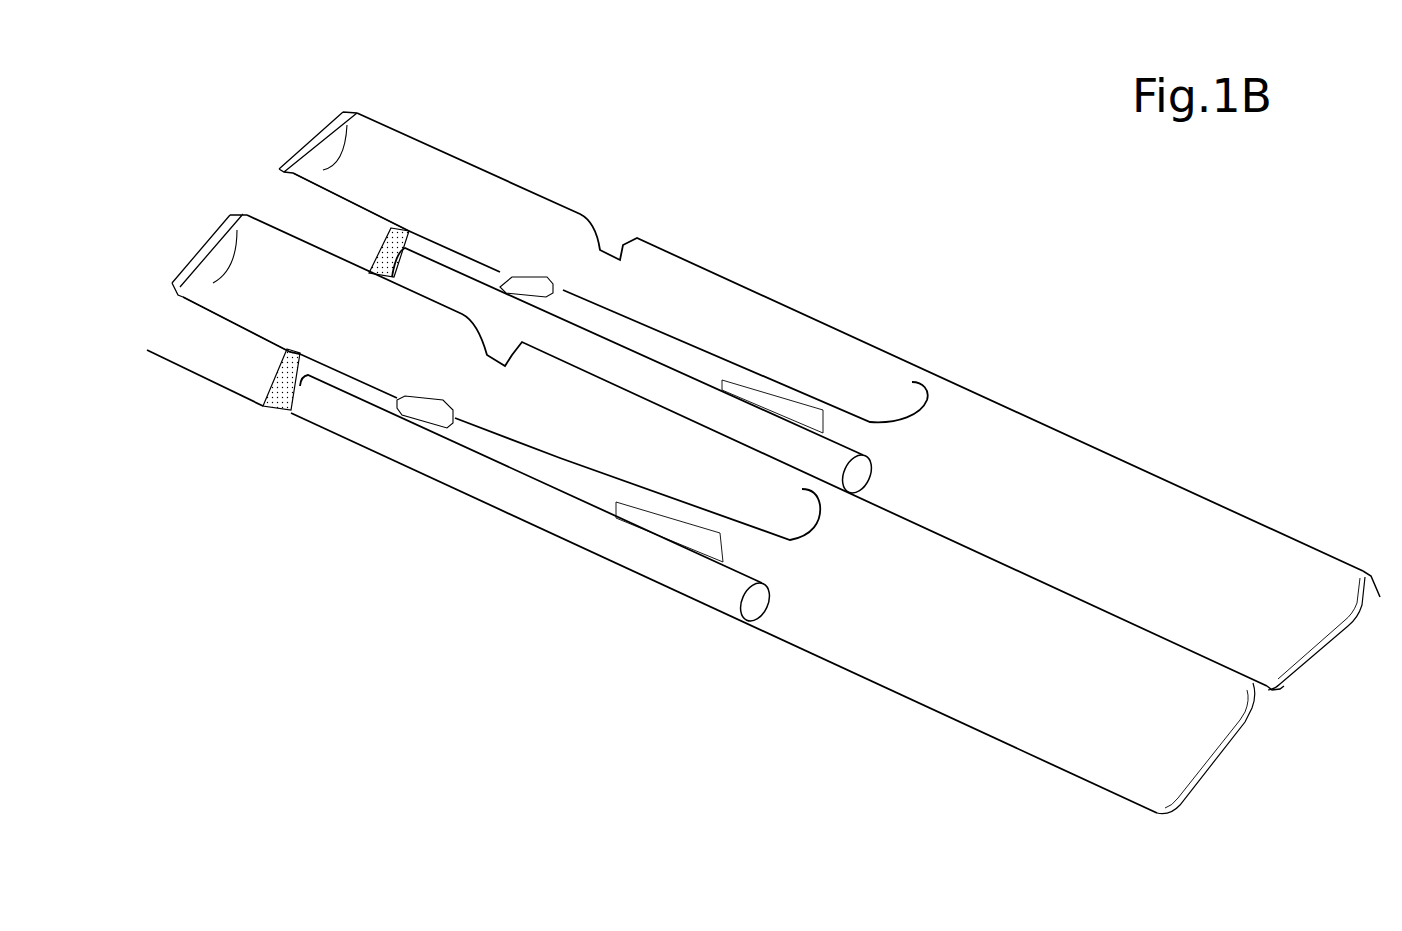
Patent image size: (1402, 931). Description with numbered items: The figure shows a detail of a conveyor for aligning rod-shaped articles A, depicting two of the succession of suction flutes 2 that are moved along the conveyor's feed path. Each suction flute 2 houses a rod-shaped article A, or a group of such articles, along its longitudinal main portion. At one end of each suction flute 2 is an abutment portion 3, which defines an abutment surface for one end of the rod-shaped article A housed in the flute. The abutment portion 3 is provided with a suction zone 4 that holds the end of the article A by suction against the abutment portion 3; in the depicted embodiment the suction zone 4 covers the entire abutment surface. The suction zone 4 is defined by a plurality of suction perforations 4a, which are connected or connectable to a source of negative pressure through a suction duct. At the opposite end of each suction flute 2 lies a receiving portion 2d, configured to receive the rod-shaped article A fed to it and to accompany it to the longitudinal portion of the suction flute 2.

The suction flute 2 is at (1152, 593).
The receiving portion 2d is at (1260, 623).
The abutment portion 3 is at (362, 250).
The suction zone 4 is at (413, 238).
The suction perforations 4a is at (389, 240).
The rod-shaped article A is at (785, 443).